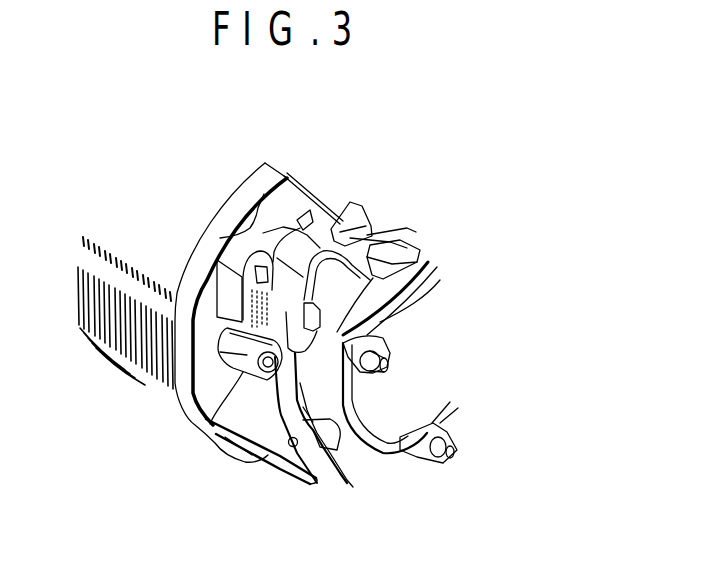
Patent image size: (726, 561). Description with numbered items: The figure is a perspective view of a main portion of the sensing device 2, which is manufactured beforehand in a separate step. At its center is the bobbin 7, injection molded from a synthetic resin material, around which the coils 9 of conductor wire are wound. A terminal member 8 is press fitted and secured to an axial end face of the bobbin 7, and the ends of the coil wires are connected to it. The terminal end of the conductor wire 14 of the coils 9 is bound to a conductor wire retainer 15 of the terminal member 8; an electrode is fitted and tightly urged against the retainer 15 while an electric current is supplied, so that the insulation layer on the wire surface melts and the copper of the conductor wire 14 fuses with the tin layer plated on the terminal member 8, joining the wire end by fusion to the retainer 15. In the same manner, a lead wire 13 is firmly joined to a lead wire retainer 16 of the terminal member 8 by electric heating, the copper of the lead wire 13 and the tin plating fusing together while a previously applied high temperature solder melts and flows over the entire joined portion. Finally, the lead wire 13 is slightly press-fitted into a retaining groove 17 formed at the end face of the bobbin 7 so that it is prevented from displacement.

The sensing device 2 is at (467, 223).
The bobbin 7 is at (188, 415).
The terminal member 8 is at (330, 315).
The coils 9 is at (122, 340).
The lead wire 13 is at (317, 500).
The conductor wire 14 is at (318, 197).
The conductor wire retainer 15 is at (370, 218).
The lead wire retainer 16 is at (237, 358).
The retaining groove 17 is at (270, 457).